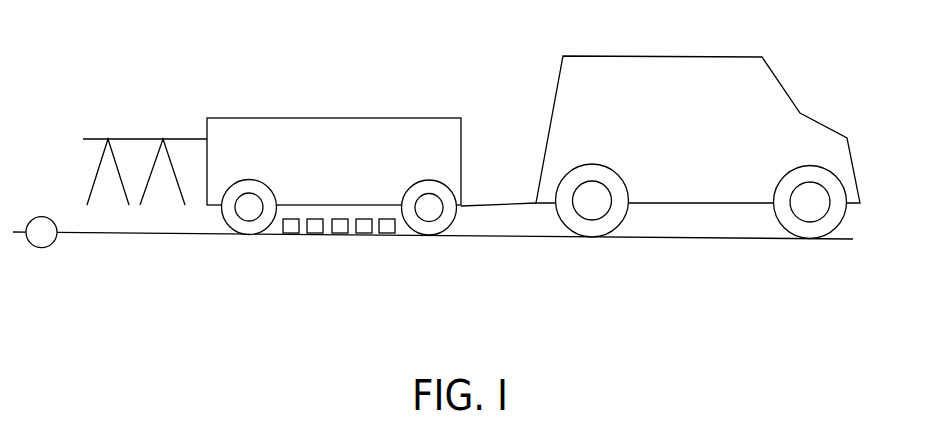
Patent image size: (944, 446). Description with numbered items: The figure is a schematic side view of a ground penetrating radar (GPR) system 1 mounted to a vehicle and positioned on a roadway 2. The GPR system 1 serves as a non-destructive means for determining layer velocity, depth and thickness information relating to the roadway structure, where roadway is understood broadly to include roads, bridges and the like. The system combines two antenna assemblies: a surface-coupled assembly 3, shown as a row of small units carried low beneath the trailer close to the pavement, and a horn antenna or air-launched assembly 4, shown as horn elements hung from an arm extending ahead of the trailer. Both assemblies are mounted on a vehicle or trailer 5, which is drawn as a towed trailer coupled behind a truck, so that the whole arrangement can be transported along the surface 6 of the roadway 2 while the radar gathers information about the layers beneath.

The ground penetrating radar system 1 is at (428, 85).
The roadway 2 is at (487, 275).
The surface-coupled assembly 3 is at (277, 243).
The horn antenna or air-launched assembly 4 is at (75, 243).
The vehicle or trailer 5 is at (327, 177).
The surface 6 is at (41, 232).